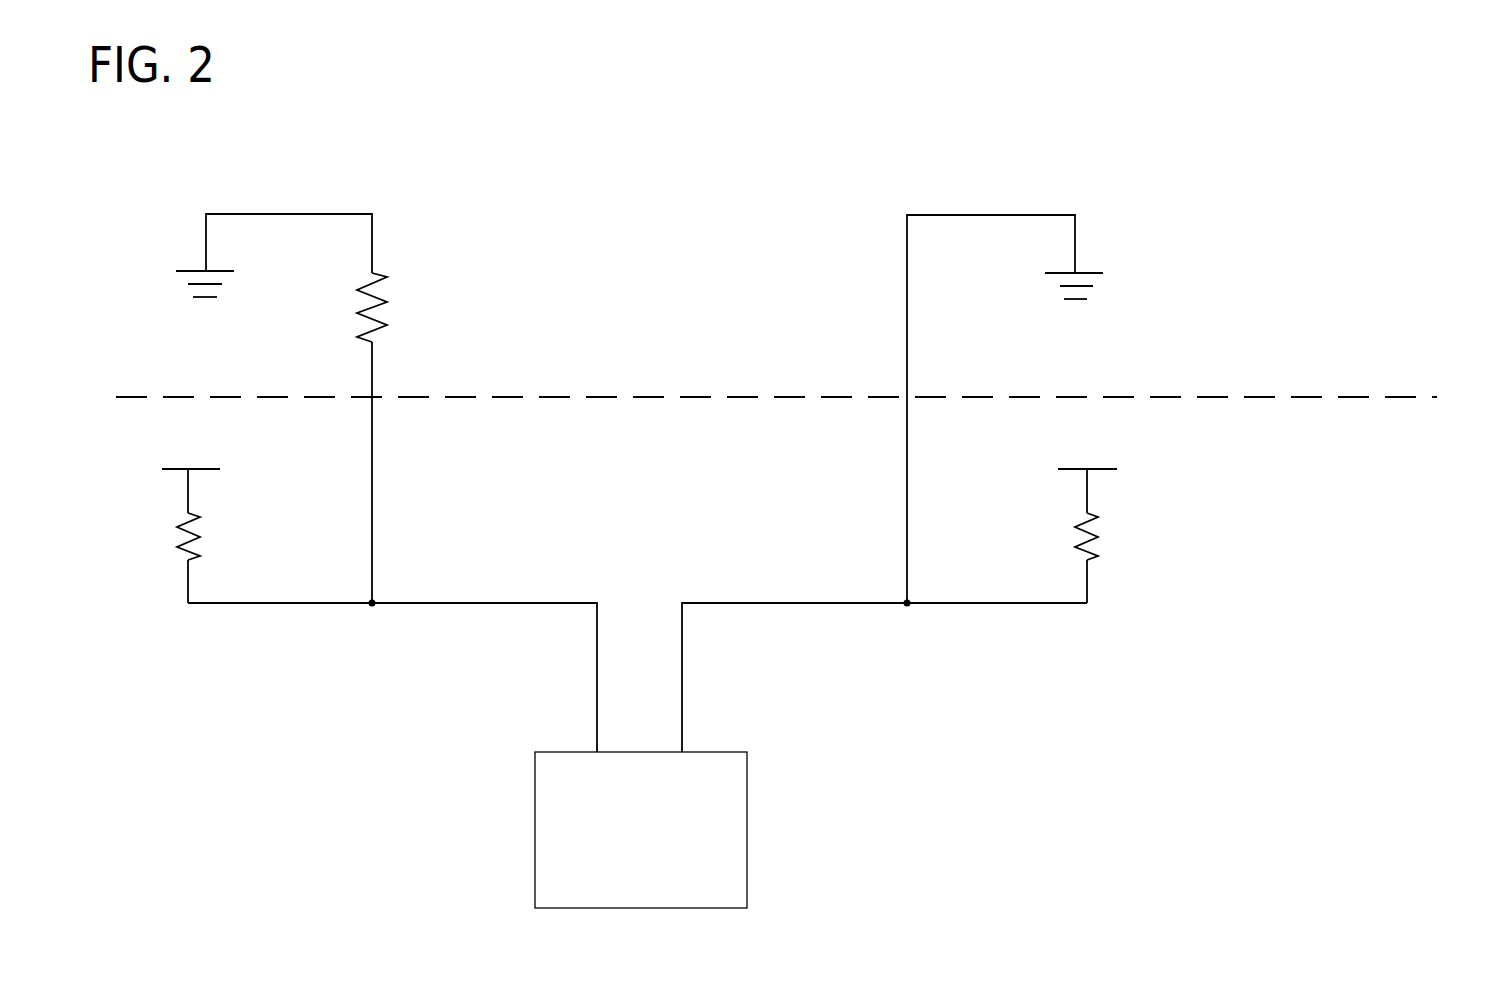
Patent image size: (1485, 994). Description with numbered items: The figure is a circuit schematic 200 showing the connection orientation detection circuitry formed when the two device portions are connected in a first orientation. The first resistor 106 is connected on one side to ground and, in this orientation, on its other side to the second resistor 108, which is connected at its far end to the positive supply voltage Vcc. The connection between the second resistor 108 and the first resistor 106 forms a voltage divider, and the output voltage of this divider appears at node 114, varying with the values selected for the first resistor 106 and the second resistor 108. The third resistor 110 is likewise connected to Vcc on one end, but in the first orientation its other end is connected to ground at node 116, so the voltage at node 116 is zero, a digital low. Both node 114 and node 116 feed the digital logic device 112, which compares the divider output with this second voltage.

The circuit schematic 200 is at (1168, 156).
The first resistor 106 is at (390, 312).
The second resistor 108 is at (203, 537).
The third resistor 110 is at (1100, 538).
The digital logic device 112 is at (622, 882).
The node 114 is at (372, 604).
The node 116 is at (907, 604).